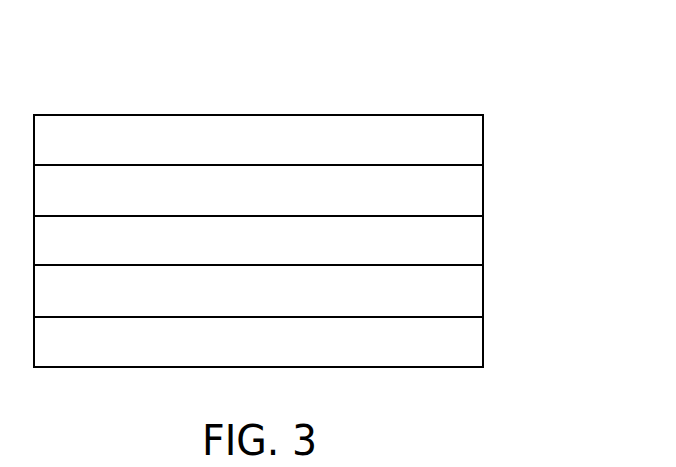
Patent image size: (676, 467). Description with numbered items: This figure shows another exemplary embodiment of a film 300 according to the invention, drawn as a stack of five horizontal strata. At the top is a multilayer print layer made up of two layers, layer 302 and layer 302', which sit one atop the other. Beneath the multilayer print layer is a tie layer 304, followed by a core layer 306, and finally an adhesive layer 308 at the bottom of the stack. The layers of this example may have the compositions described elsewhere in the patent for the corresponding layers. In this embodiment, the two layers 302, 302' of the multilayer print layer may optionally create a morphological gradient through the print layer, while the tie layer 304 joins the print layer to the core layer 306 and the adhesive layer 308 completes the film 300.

The film 300 is at (492, 82).
The layer 302 is at (301, 140).
The layer 302' is at (304, 190).
The tie layer 304 is at (483, 246).
The core layer 306 is at (483, 296).
The adhesive layer 308 is at (483, 346).